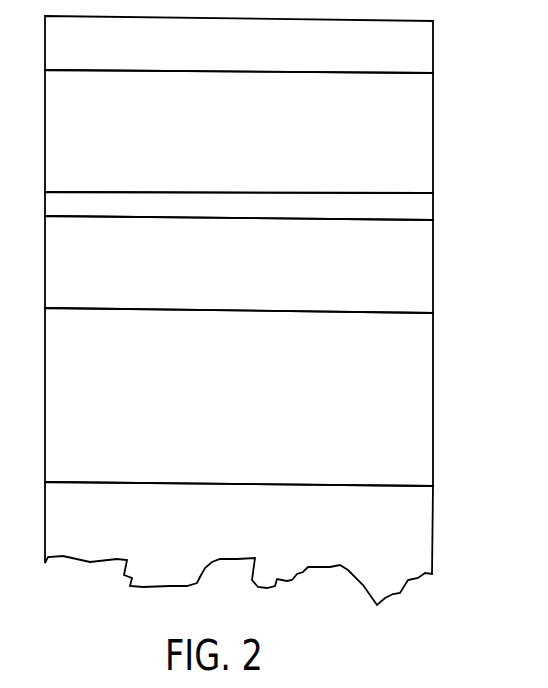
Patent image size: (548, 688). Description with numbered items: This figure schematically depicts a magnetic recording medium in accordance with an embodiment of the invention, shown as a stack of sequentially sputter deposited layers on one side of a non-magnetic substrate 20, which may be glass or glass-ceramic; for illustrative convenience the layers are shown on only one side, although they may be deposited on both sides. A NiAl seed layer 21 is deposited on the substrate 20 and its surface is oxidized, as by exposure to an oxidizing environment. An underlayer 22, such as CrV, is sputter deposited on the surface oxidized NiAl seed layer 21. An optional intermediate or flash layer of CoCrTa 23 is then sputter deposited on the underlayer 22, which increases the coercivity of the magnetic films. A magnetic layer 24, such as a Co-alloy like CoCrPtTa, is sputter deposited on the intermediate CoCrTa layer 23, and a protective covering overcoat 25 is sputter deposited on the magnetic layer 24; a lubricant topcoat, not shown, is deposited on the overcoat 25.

The non-magnetic substrate 20 is at (433, 530).
The NiAl seed layer 21 is at (433, 391).
The underlayer 22 is at (433, 261).
The intermediate or flash layer of CoCrTa 23 is at (433, 207).
The magnetic layer 24 is at (433, 125).
The protective covering overcoat 25 is at (433, 50).